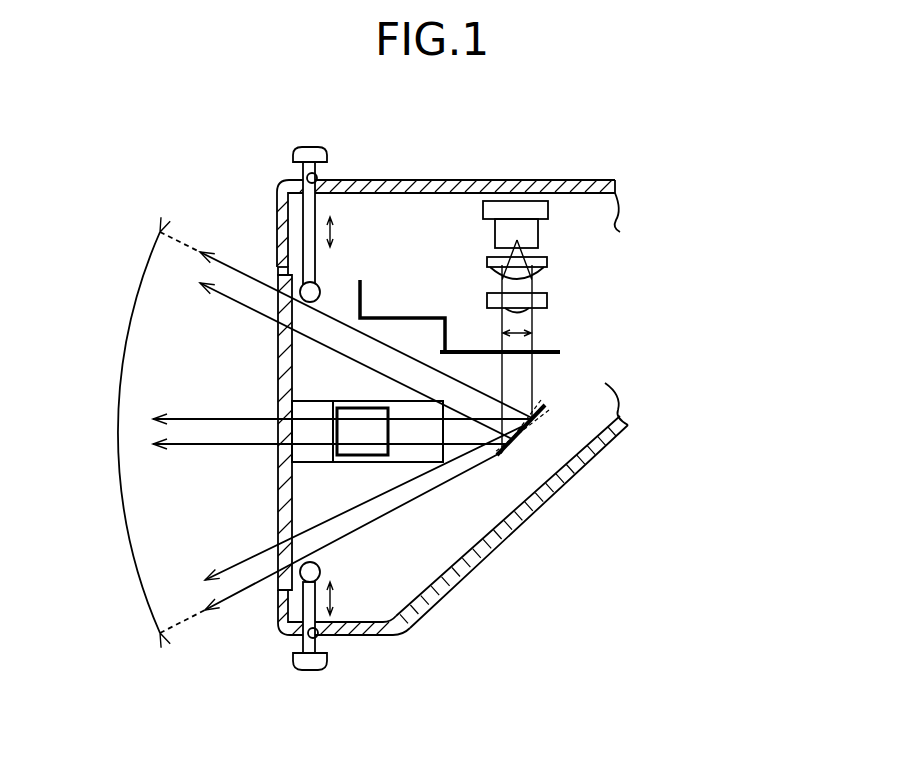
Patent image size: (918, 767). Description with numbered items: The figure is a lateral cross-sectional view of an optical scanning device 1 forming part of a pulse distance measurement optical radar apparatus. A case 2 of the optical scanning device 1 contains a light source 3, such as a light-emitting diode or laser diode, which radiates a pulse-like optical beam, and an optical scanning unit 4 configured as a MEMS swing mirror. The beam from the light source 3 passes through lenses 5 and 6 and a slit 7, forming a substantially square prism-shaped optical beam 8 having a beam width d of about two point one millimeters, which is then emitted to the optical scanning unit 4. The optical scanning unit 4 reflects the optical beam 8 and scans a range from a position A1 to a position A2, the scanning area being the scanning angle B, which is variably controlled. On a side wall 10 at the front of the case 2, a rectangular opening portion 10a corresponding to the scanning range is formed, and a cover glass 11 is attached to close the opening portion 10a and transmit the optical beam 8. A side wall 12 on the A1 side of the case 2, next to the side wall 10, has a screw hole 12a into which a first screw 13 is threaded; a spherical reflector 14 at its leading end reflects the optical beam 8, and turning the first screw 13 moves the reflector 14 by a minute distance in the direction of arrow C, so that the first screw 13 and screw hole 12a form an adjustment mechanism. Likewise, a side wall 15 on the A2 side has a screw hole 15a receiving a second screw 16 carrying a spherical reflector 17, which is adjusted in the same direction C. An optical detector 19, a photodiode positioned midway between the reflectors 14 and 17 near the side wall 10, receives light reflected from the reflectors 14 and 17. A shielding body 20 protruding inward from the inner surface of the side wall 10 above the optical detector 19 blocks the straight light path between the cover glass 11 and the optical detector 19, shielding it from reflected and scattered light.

The optical scanning device 1 is at (560, 160).
The case 2 is at (500, 180).
The light source 3 is at (540, 227).
The optical scanning unit 4 is at (528, 437).
The lens 5 is at (541, 268).
The lens 6 is at (548, 299).
The slit 7 is at (548, 357).
The optical beam 8 is at (533, 377).
The side wall 10 is at (277, 210).
The opening portion 10a is at (278, 275).
The cover glass 11 is at (278, 360).
The side wall 12 is at (433, 180).
The screw hole 12a is at (318, 177).
The first screw 13 is at (306, 147).
The reflector 14 is at (320, 290).
The side wall 15 is at (367, 635).
The screw hole 15a is at (313, 637).
The second screw 16 is at (310, 672).
The reflector 17 is at (320, 570).
The optical detector 19 is at (360, 457).
The shielding body 20 is at (313, 462).
The position A1 is at (270, 287).
The position A2 is at (278, 580).
The scanning angle B is at (118, 421).
The arrow C is at (335, 233).
The beam width d is at (535, 337).